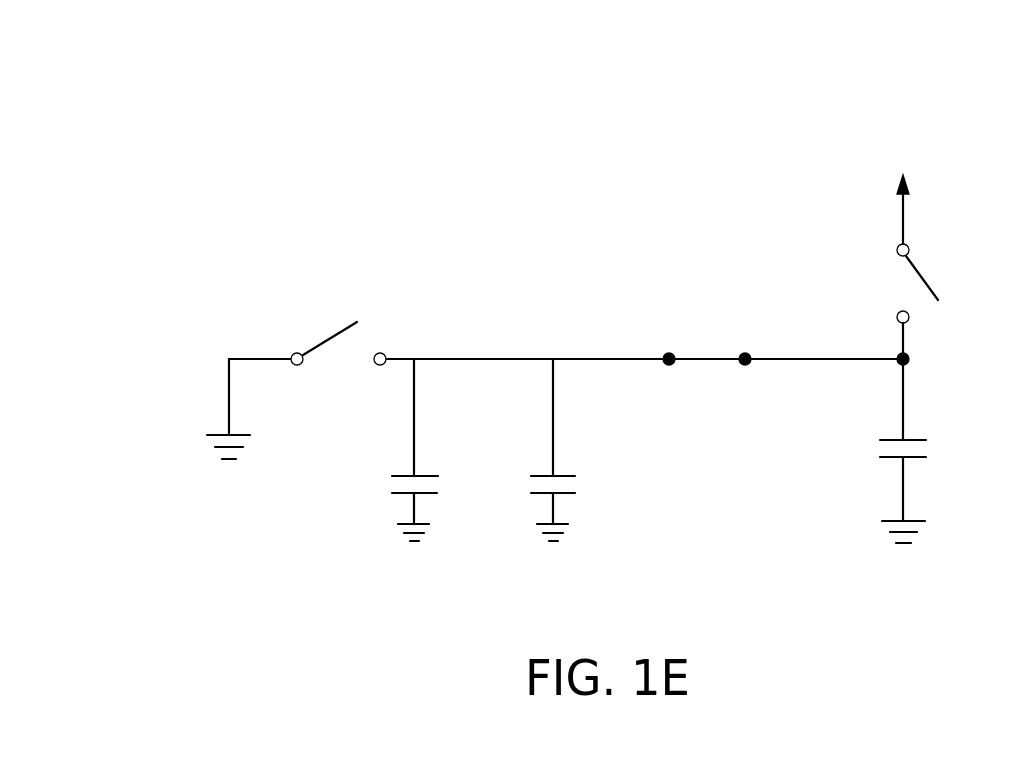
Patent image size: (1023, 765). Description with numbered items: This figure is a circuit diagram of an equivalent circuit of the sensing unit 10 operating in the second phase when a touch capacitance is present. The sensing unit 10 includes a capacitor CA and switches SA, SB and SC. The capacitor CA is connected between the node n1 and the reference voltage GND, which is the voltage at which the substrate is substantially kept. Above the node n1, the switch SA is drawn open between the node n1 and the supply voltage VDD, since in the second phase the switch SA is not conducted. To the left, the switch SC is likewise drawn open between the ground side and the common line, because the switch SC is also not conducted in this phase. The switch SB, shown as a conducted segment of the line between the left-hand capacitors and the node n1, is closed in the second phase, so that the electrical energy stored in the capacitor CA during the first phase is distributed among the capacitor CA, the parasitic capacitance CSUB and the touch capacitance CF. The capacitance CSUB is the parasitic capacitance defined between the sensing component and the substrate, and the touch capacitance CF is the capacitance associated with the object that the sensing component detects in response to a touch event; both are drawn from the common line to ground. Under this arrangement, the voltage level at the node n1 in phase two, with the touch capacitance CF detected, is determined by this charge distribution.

The sensing unit 10 is at (238, 118).
The switch SC is at (341, 328).
The switch SB is at (706, 350).
The switch SA is at (925, 277).
The supply voltage VDD is at (903, 193).
The node n1 is at (912, 358).
The capacitor CA is at (928, 449).
The reference voltage GND is at (903, 552).
The capacitance CSUB is at (392, 483).
The touch capacitance CF is at (578, 486).